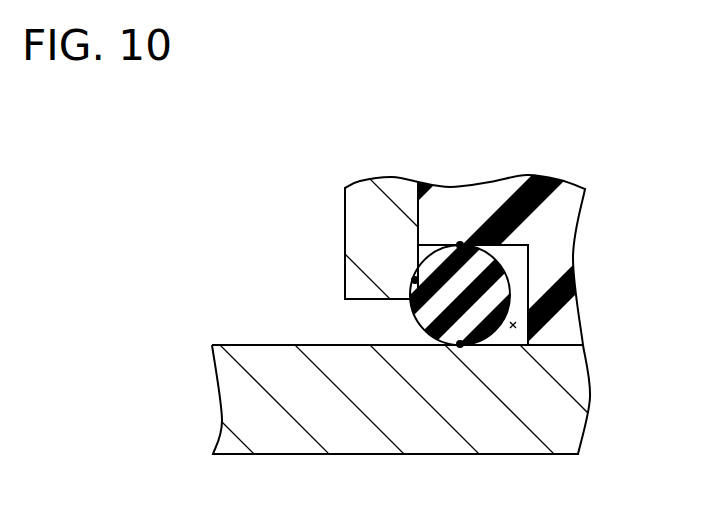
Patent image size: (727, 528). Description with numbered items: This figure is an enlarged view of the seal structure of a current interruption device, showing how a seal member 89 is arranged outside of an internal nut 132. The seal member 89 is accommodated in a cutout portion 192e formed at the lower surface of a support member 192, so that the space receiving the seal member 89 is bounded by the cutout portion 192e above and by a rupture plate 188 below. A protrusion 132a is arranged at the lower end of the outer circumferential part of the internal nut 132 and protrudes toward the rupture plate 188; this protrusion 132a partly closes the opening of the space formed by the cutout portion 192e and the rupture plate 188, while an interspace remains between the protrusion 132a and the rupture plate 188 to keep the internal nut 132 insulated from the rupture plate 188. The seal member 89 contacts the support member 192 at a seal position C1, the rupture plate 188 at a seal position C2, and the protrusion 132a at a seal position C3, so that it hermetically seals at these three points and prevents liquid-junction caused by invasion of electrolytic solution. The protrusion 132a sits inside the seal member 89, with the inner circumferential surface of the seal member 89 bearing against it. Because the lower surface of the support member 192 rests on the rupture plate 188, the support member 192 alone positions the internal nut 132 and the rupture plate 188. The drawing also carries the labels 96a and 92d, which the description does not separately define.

The internal nut 132 is at (400, 160).
The protrusion 132a is at (383, 274).
The support member 192 is at (566, 160).
The cutout portion 192e is at (531, 268).
The corner portion 96a is at (516, 325).
The seal member 89 is at (430, 312).
The rupture plate 188 is at (347, 437).
The top surface of base plate 92d is at (557, 345).
The seal position C1 is at (460, 245).
The seal position C2 is at (460, 345).
The seal position C3 is at (415, 279).